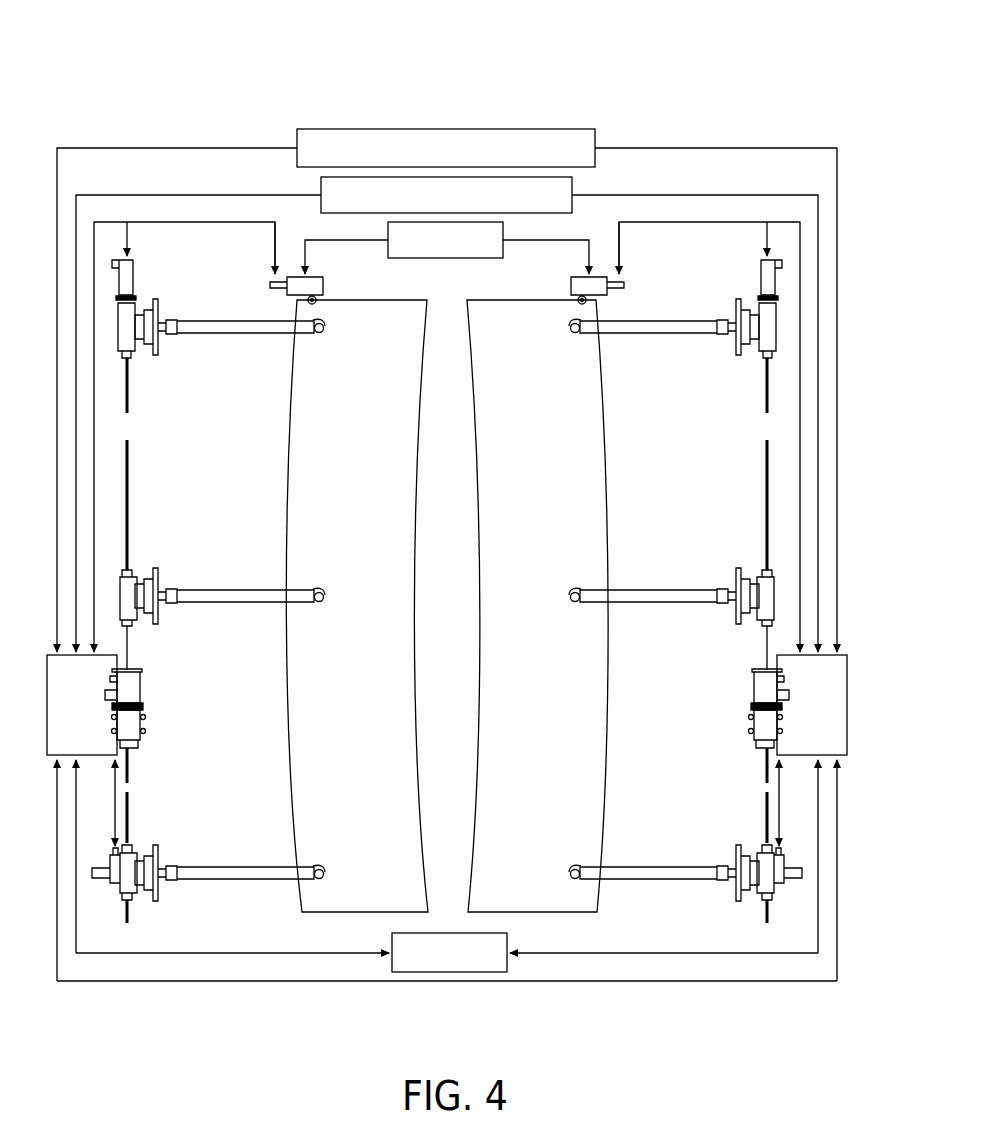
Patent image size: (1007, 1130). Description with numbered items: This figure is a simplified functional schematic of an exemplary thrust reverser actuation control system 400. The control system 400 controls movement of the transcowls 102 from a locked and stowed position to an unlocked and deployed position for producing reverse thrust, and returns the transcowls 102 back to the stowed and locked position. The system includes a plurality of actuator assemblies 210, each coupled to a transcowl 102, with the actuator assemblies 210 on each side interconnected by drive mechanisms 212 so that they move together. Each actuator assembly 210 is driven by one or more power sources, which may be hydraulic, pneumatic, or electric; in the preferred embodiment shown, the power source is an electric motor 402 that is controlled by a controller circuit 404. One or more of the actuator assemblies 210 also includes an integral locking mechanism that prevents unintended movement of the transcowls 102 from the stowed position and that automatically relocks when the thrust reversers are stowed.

The control system 400 is at (786, 90).
The transcowl 102 is at (380, 391).
The actuator assembly 210 is at (174, 352).
The drive mechanism 212 is at (130, 459).
The electric motor 402 is at (143, 738).
The controller circuit 404 is at (102, 732).